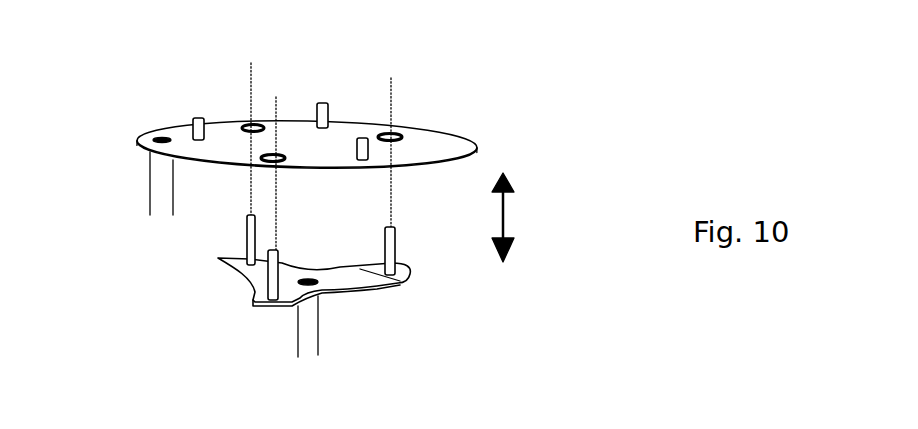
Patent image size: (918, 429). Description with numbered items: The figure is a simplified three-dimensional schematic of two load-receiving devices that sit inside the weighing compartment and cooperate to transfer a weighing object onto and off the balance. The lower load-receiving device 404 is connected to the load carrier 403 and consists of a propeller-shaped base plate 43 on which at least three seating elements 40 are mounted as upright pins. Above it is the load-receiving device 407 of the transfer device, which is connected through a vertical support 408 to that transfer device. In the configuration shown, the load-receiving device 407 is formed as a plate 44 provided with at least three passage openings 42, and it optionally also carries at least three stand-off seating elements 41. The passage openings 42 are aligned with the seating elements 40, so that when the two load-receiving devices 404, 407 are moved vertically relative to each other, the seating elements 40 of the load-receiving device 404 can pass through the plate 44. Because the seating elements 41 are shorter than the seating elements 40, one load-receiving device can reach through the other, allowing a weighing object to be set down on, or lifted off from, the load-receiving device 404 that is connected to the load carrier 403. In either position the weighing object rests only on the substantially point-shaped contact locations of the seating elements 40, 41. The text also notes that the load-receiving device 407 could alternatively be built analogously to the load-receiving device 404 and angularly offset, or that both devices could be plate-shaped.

The load-receiving device 407 is at (338, 99).
The plate 44 is at (305, 140).
The passage openings 42 is at (397, 135).
The seating elements 41 is at (193, 120).
The vertical support 408 is at (160, 187).
The load-receiving device 404 is at (327, 311).
The propeller-shaped base plate 43 is at (403, 283).
The seating elements 40 is at (252, 235).
The load carrier 403 is at (305, 327).